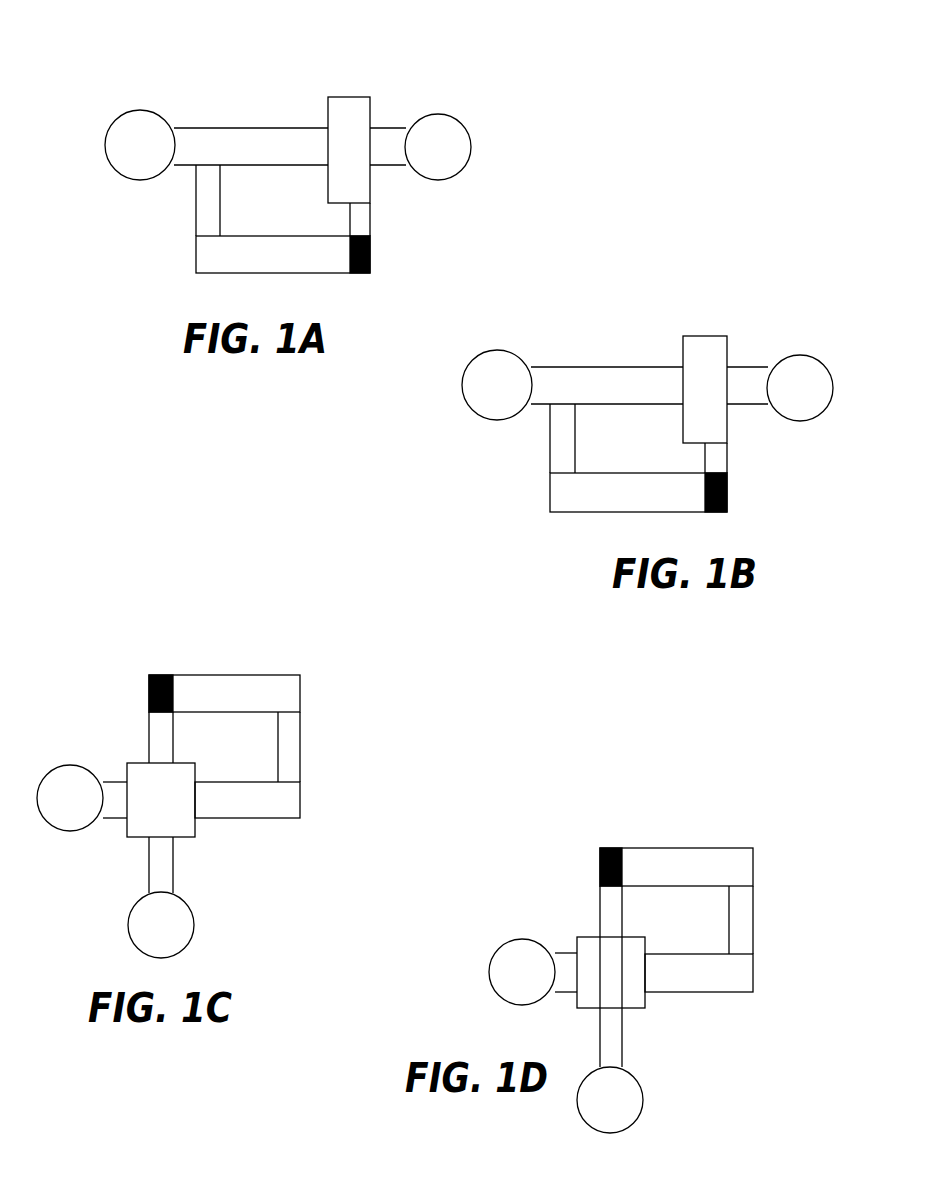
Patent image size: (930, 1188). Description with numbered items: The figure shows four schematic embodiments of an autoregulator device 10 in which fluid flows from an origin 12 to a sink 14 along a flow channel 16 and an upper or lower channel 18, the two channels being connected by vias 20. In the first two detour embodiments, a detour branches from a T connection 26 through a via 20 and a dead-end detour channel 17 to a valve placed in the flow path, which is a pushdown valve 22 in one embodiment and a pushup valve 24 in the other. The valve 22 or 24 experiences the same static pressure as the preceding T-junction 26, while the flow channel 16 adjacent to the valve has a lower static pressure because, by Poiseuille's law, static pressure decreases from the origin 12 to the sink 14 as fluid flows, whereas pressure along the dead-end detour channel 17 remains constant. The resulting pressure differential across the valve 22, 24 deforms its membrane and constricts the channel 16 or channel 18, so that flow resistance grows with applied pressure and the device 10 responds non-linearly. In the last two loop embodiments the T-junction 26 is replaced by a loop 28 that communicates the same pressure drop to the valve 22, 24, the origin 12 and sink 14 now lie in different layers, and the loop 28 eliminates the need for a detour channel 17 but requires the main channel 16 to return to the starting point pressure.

In FIG. 1A, the device 10 is at (158, 90).
In FIG. 1A, the origin 12 is at (115, 163).
In FIG. 1B, the origin 12 is at (473, 403).
In FIG. 1C, the origin 12 is at (63, 768).
In FIG. 1D, the origin 12 is at (513, 943).
In FIG. 1A, the sink 14 is at (463, 125).
In FIG. 1B, the sink 14 is at (813, 358).
In FIG. 1C, the sink 14 is at (187, 940).
In FIG. 1D, the sink 14 is at (638, 1100).
In FIG. 1A, the channel 16 is at (240, 145).
In FIG. 1C, the channel 16 is at (168, 863).
In FIG. 1D, the channel 16 is at (682, 860).
In FIG. 1A, the detour channel 17 is at (207, 258).
In FIG. 1B, the detour channel 17 is at (560, 500).
In FIG. 1A, the channel 18 is at (362, 218).
In FIG. 1B, the channel 18 is at (637, 382).
In FIG. 1C, the channel 18 is at (267, 690).
In FIG. 1D, the channel 18 is at (607, 910).
In FIG. 1A, the via 20 is at (372, 255).
In FIG. 1B, the via 20 is at (728, 492).
In FIG. 1C, the via 20 is at (162, 675).
In FIG. 1D, the via 20 is at (608, 847).
In FIG. 1A, the pushdown valve 22 is at (350, 113).
In FIG. 1C, the pushdown valve 22 is at (150, 814).
In FIG. 1B, the pushup valve 24 is at (708, 345).
In FIG. 1D, the pushup valve 24 is at (638, 997).
In FIG. 1A, the T connection 26 is at (203, 148).
In FIG. 1B, the T connection 26 is at (565, 382).
In FIG. 1C, the loop 28 is at (320, 742).
In FIG. 1D, the loop 28 is at (762, 947).